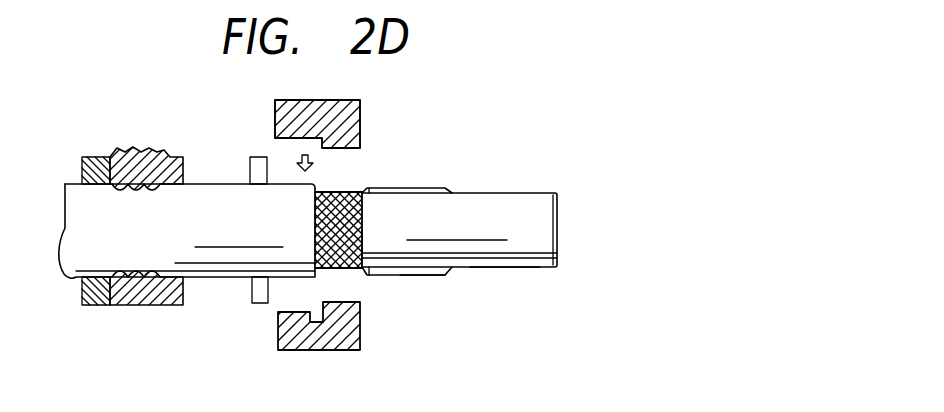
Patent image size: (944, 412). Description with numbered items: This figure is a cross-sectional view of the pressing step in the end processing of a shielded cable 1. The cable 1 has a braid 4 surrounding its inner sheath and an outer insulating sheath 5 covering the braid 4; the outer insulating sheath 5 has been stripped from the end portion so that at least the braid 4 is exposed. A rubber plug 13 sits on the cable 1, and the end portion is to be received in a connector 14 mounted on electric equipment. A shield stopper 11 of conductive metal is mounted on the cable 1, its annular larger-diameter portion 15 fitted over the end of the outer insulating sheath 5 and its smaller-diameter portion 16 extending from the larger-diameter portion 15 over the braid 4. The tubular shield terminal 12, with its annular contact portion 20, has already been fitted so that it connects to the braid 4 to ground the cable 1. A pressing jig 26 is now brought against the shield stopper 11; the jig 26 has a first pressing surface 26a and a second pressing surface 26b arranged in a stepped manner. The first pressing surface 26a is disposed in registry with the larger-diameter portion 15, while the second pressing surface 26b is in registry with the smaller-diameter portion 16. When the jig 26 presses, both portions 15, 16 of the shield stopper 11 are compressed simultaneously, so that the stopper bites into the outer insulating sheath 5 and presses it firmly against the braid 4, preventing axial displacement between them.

The shielded cable 1 is at (508, 273).
The braid 4 is at (365, 238).
The outer insulating sheath 5 is at (212, 264).
The shield stopper 11 is at (330, 186).
The shield terminal 12 is at (450, 186).
The rubber plug 13 is at (130, 156).
The connector 14 is at (350, 273).
The larger-diameter portion 15 is at (270, 187).
The smaller-diameter portion 16 is at (368, 187).
The annular contact portion 20 is at (431, 276).
The pressing jig 26 is at (356, 101).
The first pressing surface 26a is at (281, 149).
The second pressing surface 26b is at (348, 150).